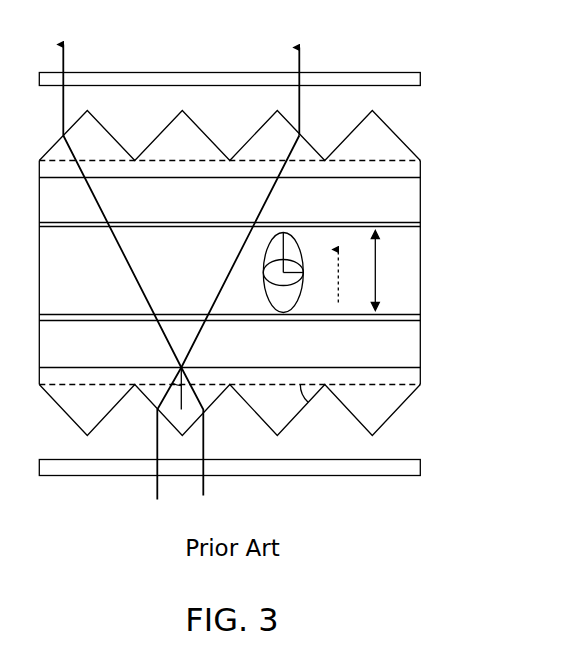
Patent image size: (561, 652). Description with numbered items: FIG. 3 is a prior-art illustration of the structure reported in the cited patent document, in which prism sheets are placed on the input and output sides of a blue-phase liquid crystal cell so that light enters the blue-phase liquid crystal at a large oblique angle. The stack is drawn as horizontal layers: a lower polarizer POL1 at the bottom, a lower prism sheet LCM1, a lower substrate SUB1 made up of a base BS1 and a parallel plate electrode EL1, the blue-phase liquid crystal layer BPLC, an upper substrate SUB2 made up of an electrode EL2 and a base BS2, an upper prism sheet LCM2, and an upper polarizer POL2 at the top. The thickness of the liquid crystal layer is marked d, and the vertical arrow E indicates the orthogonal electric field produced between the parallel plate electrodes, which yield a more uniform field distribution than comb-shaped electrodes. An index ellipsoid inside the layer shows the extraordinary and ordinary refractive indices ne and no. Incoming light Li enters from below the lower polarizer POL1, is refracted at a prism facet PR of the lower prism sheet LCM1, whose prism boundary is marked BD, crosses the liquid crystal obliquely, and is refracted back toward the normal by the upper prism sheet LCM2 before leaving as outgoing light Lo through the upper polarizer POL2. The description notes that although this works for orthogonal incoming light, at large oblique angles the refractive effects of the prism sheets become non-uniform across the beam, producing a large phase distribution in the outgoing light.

The upper polarizer POL2 is at (410, 77).
The upper liquid crystal lens / prism film LCM2 is at (403, 146).
The upper base substrate BS2 is at (405, 203).
The upper electrode EL2 is at (405, 224).
The upper substrate SUB2 is at (466, 193).
The blue phase liquid crystal layer BPLC is at (405, 270).
The lower electrode EL1 is at (405, 316).
The lower base substrate BS1 is at (405, 337).
The lower substrate SUB1 is at (466, 310).
The lower prism film LCM1 is at (397, 397).
The prism PR is at (287, 418).
The boundary BD is at (345, 379).
The lower polarizer POL1 is at (410, 465).
The output light Lo is at (231, 262).
The incident light Li is at (133, 280).
The extraordinary refractive index ne is at (283, 273).
The ordinary refractive index no is at (290, 273).
The electric field E is at (344, 276).
The cell gap thickness d is at (379, 271).